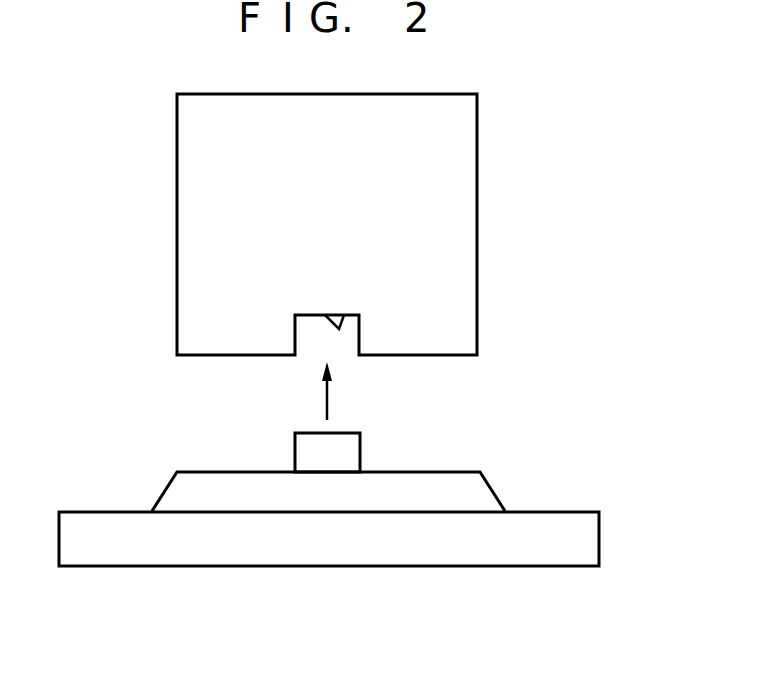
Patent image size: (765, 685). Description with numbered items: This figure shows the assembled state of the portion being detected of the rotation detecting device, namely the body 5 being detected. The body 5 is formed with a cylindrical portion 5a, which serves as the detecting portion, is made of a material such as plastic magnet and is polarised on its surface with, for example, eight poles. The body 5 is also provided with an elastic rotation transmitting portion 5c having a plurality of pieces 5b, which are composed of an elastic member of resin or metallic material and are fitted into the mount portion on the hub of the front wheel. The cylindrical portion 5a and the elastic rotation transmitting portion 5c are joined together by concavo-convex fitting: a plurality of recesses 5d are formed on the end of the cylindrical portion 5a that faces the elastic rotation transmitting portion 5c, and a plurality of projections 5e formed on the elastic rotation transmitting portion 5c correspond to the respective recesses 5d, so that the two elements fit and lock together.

The body being detected 5 is at (580, 123).
The cylindrical portion 5a is at (463, 120).
The pieces 5b is at (552, 530).
The elastic rotation transmitting portion 5c is at (347, 545).
The recesses 5d is at (341, 326).
The projections 5e is at (340, 453).